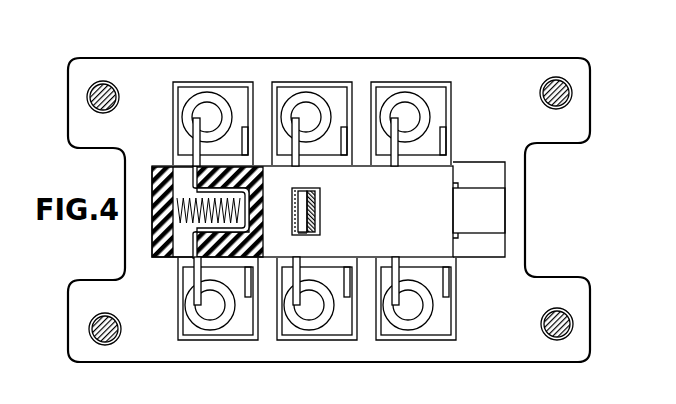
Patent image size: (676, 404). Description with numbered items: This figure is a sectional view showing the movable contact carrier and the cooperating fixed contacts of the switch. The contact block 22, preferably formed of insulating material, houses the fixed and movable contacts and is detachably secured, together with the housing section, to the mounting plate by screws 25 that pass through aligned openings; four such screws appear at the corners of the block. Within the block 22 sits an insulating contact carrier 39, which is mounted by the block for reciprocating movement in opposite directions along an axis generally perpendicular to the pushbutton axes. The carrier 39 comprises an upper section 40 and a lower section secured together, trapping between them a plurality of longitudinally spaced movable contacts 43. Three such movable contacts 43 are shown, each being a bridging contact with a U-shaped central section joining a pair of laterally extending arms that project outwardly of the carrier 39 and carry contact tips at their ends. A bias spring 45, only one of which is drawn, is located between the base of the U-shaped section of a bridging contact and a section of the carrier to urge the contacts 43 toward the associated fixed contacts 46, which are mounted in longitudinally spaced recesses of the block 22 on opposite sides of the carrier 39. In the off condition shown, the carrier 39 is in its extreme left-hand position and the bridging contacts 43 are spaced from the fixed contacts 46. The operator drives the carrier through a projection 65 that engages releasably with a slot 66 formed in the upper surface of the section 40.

The contact block 22 is at (525, 361).
The screws 25 is at (104, 81).
The contact carrier 39 is at (459, 176).
The upper section 40 is at (455, 246).
The movable contacts 43 is at (262, 237).
The bias springs 45 is at (183, 240).
The fixed contacts 46 is at (248, 143).
The projection 65 is at (321, 208).
The slot 66 is at (305, 235).